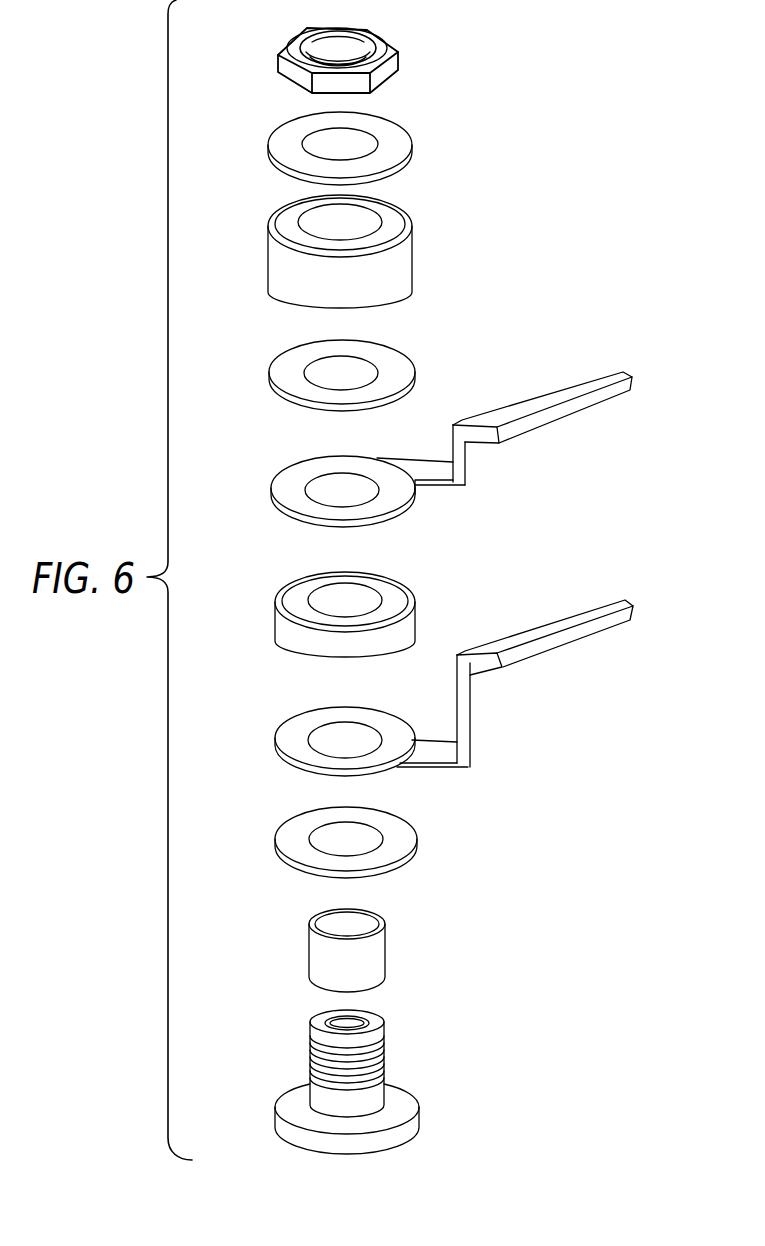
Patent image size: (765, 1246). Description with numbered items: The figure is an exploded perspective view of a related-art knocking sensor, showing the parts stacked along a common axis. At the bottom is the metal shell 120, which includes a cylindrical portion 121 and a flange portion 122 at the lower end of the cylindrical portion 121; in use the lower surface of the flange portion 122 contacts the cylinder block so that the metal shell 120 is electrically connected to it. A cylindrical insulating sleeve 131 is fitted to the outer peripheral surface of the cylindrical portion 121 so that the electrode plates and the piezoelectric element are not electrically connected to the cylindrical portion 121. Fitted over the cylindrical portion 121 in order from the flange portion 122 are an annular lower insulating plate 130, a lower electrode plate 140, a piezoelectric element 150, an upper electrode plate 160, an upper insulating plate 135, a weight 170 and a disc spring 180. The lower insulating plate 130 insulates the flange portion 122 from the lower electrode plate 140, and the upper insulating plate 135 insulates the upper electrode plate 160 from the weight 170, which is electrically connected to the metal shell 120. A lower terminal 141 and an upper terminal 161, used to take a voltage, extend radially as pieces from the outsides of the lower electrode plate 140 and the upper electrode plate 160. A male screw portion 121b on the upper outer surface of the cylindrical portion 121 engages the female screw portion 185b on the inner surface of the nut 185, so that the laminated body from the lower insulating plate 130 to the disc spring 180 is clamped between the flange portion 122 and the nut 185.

The metal shell 120 is at (379, 1056).
The cylindrical portion 121 is at (379, 1063).
The male screw portion 121b is at (387, 1067).
The flange portion 122 is at (410, 1105).
The lower insulating plate 130 is at (402, 832).
The insulating sleeve 131 is at (317, 950).
The upper insulating plate 135 is at (397, 362).
The lower electrode plate 140 is at (426, 681).
The lower terminal 141 is at (595, 620).
The piezoelectric element 150 is at (293, 587).
The upper electrode plate 160 is at (424, 434).
The upper terminal 161 is at (577, 395).
The weight 170 is at (392, 267).
The disc spring 180 is at (393, 128).
The nut 185 is at (392, 46).
The female screw portion 185b is at (362, 31).